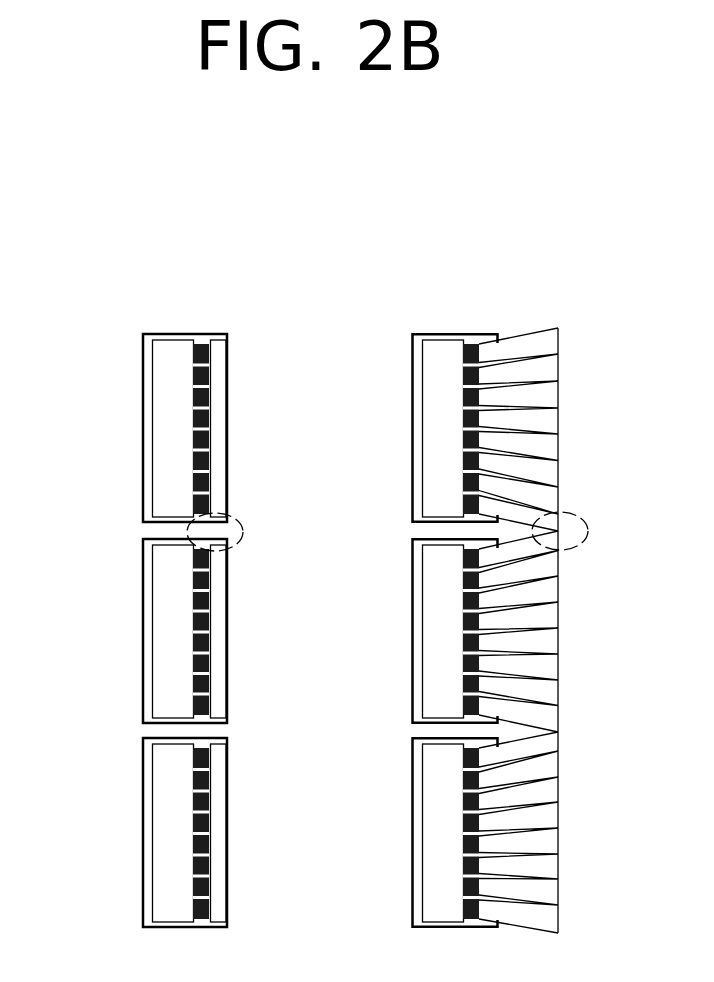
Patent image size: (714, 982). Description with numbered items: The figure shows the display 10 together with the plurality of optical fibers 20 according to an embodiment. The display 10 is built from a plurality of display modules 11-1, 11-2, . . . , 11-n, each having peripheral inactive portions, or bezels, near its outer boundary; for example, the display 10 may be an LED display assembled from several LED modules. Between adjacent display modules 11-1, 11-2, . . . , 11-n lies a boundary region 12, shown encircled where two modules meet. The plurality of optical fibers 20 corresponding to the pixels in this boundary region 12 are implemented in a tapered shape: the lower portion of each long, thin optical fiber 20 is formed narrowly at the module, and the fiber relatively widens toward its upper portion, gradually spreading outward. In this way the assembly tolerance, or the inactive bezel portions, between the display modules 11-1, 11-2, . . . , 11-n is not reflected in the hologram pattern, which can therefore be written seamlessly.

The display 10 is at (274, 592).
The display module 11-1 is at (158, 428).
The display module 11-2 is at (158, 628).
The display module 11-n is at (158, 828).
The boundary region 12 is at (243, 530).
The optical fibers 20 is at (516, 337).